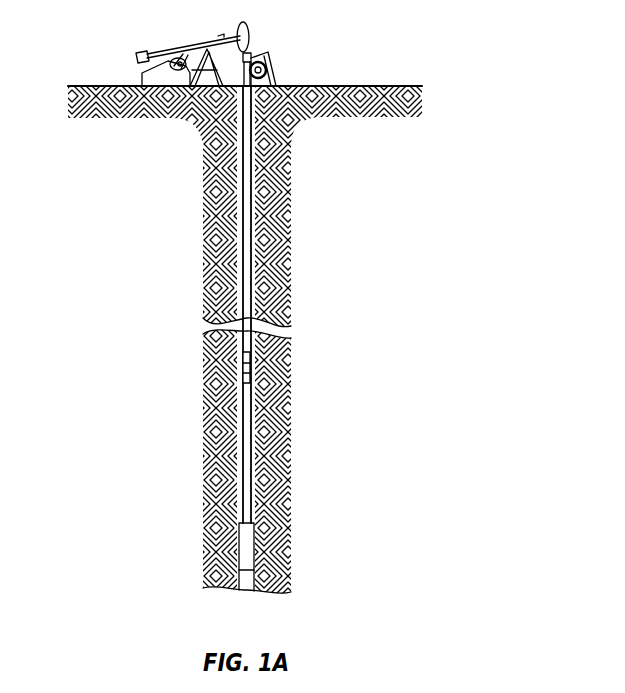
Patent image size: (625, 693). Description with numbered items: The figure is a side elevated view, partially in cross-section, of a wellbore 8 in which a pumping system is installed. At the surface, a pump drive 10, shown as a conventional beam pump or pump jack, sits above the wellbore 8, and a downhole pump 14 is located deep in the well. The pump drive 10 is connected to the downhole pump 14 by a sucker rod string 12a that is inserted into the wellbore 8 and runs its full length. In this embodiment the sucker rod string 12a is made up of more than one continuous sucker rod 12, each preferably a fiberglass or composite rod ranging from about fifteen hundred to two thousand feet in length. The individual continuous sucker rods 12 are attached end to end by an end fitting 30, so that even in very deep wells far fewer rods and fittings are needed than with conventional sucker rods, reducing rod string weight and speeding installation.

The wellbore 8 is at (237, 197).
The pump drive 10 is at (191, 44).
The continuous sucker rod 12 is at (253, 244).
The sucker rod string 12a is at (263, 277).
The end fitting 30 is at (251, 372).
The downhole pump 14 is at (247, 548).